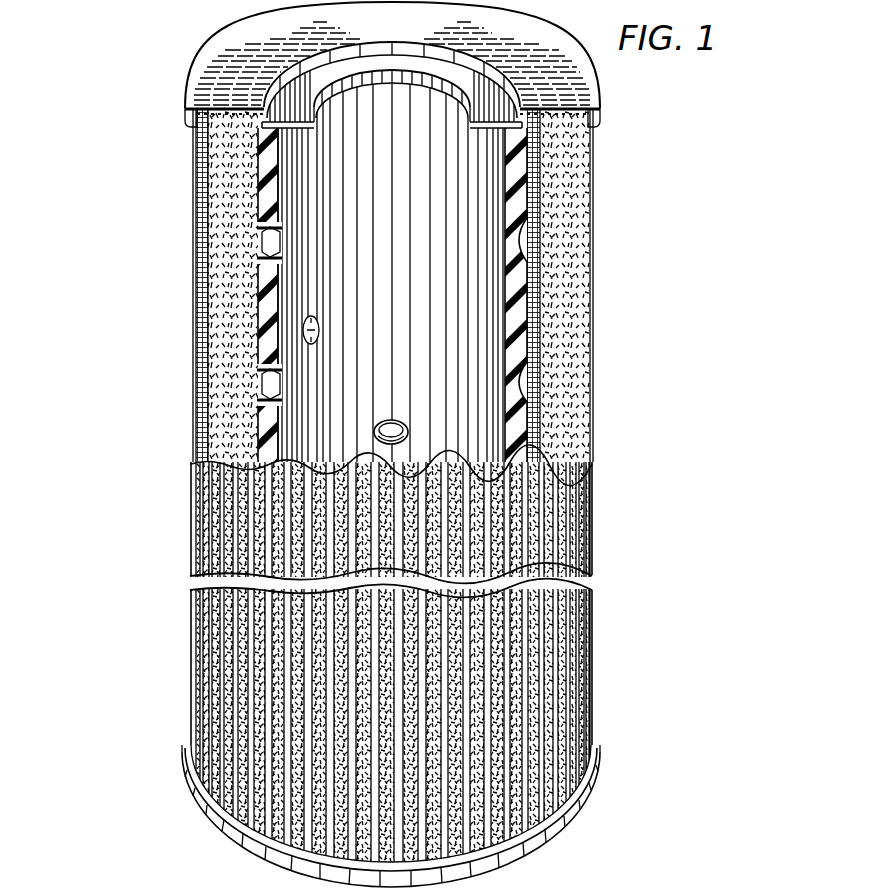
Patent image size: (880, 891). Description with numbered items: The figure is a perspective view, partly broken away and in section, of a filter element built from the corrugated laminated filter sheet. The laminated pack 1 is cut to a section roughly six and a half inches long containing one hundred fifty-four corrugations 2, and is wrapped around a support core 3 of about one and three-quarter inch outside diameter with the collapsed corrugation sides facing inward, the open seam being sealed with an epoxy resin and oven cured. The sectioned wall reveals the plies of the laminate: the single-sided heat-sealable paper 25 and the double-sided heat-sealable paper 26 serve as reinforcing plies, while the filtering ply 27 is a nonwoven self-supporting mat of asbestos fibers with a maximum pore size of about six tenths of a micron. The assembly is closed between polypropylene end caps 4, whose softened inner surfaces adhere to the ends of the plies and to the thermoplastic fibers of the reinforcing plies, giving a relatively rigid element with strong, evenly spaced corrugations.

The pack 1 is at (175, 546).
The corrugations 2 is at (165, 498).
The support core 3 is at (262, 178).
The end caps 4 is at (562, 108).
The single-sided heat-sealable paper 25 is at (196, 258).
The double-sided heat-sealable paper 26 is at (206, 298).
The filtering ply 27 is at (196, 345).